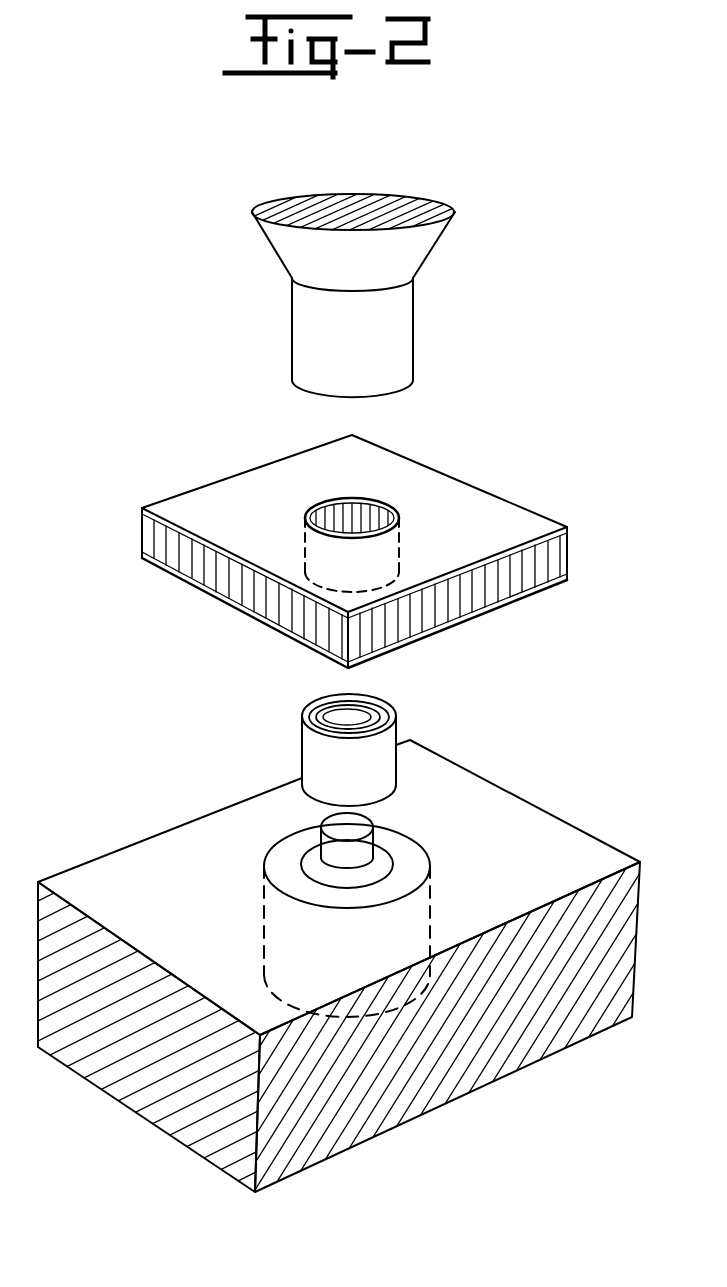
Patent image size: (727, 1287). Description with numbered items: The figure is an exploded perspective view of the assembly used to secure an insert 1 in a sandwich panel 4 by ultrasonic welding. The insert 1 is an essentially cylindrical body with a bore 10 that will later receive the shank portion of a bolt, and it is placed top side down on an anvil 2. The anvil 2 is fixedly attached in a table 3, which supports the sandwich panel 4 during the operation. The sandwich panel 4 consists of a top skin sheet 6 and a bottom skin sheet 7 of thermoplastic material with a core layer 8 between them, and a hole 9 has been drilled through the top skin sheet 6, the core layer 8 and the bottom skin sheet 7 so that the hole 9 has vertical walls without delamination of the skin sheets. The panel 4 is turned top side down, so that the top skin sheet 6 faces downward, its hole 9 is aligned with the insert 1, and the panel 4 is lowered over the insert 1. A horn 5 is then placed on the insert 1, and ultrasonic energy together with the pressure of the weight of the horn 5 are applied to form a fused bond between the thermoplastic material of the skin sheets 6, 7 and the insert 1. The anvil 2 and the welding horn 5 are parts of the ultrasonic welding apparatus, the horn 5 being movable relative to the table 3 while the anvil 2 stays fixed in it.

The insert 1 is at (332, 734).
The anvil 2 is at (424, 840).
The table 3 is at (570, 837).
The sandwich panel 4 is at (381, 531).
The horn 5 is at (400, 308).
The top skin sheet 6 is at (530, 596).
The bottom skin sheet 7 is at (493, 512).
The core layer 8 is at (547, 560).
The hole 9 is at (373, 504).
The bore 10 is at (360, 713).